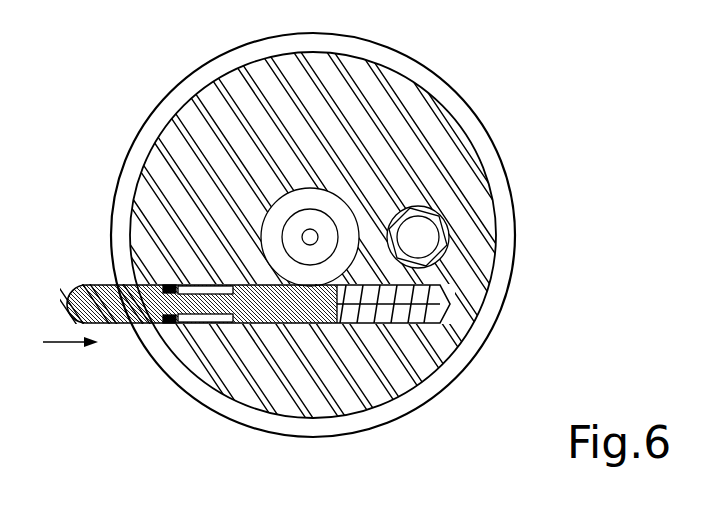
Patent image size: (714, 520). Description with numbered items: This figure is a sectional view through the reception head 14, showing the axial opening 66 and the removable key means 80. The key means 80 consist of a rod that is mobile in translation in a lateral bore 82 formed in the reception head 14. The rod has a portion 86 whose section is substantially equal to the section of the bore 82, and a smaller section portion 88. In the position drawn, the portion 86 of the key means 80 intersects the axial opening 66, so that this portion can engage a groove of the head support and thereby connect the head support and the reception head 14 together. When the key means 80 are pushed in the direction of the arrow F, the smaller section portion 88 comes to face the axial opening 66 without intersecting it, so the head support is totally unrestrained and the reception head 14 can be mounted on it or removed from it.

The reception head 14 is at (160, 103).
The axial opening 66 is at (315, 217).
The removable key means 80 is at (87, 285).
The lateral bore 82 is at (172, 323).
The portion 86 is at (311, 323).
The smaller section portion 88 is at (268, 323).
The arrow F is at (60, 343).